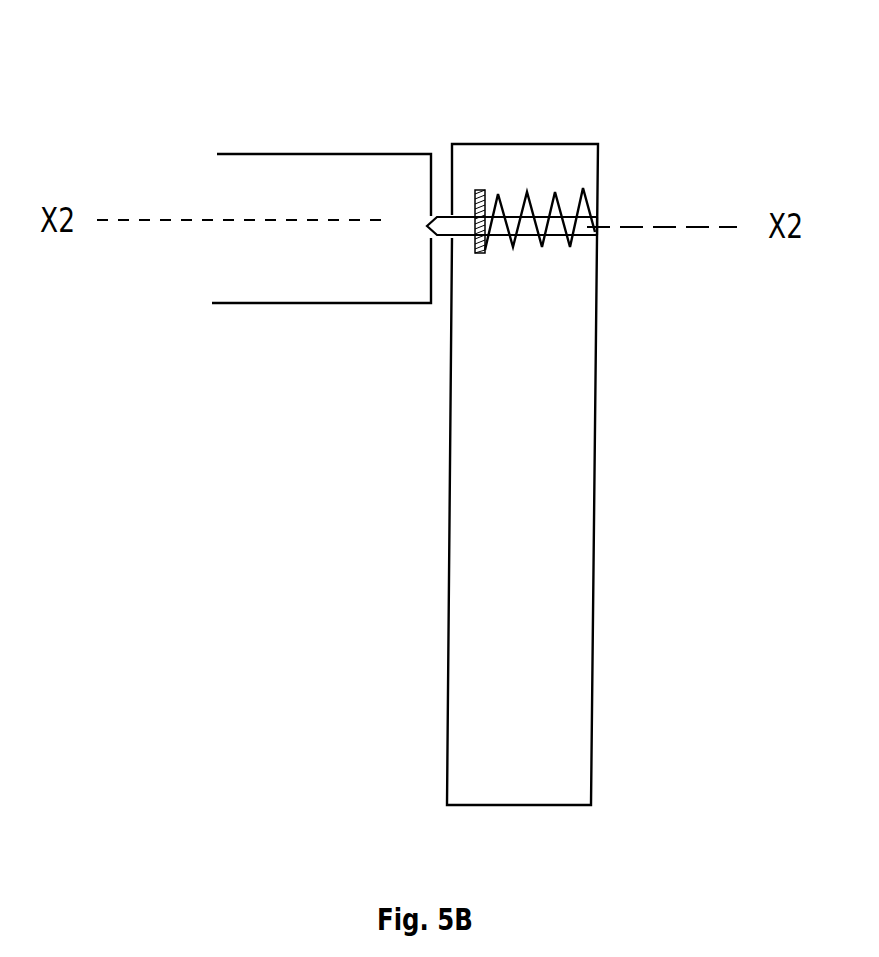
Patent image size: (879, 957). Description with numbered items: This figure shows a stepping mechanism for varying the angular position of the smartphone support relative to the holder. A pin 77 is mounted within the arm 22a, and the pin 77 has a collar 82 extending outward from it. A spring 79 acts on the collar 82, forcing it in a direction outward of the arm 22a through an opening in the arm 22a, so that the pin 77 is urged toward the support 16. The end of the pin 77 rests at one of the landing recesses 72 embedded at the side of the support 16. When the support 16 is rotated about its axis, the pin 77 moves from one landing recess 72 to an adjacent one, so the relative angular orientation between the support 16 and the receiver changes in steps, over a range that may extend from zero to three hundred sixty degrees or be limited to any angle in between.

The support 16 is at (288, 184).
The arm 22a is at (552, 142).
The landing recess 72 is at (427, 222).
The pin 77 is at (552, 237).
The spring 79 is at (587, 200).
The collar 82 is at (478, 190).